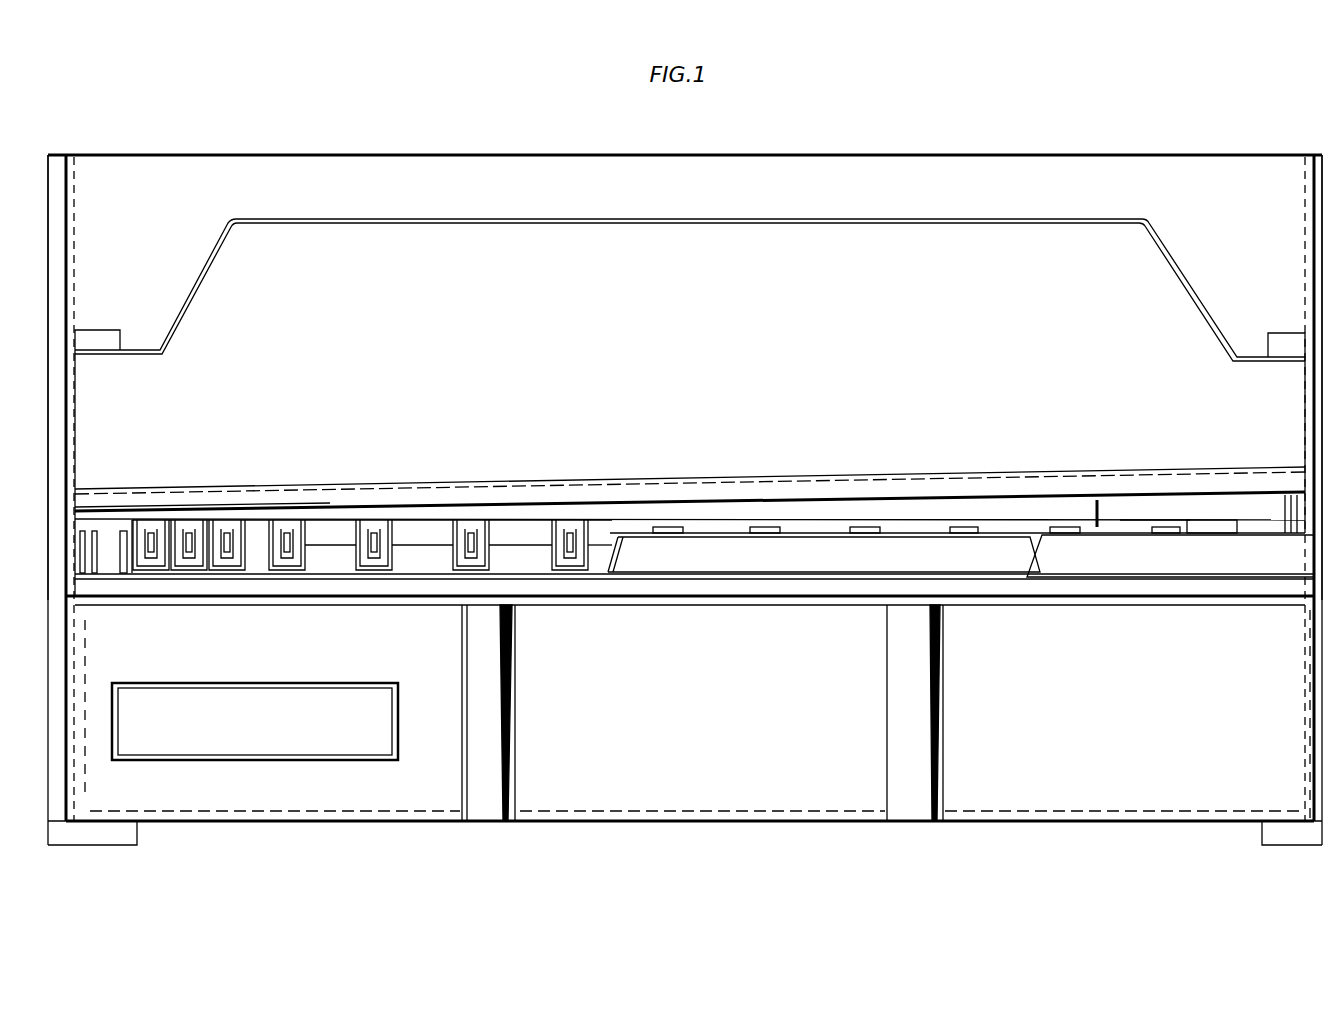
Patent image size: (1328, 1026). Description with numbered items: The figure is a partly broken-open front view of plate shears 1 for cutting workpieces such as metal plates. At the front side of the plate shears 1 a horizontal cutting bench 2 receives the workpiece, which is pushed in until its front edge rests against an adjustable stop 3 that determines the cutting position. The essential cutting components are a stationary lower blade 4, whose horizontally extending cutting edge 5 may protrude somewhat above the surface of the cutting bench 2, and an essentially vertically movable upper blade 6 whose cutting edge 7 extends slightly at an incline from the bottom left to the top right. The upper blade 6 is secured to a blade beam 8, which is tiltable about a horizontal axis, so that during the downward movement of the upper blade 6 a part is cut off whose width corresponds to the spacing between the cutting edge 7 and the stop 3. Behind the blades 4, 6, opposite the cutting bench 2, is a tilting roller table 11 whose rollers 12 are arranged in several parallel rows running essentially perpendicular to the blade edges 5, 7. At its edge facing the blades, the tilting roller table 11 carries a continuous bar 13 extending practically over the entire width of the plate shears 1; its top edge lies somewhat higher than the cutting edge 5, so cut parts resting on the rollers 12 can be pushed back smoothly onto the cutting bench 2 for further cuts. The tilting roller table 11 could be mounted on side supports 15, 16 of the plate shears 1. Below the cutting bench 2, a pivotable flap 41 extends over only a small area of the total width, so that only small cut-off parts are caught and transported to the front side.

The plate shears 1 is at (1160, 150).
The cutting bench 2 is at (1045, 550).
The stop 3 is at (503, 528).
The lower blade 4 is at (1210, 524).
The cutting edge 5 is at (1097, 527).
The upper blade 6 is at (1215, 480).
The cutting edge 7 is at (1140, 508).
The blade beam 8 is at (218, 322).
The tilting roller table 11 is at (684, 551).
The rollers 12 is at (148, 519).
The bar 13 is at (633, 557).
The side support 15 is at (60, 154).
The side support 16 is at (1320, 156).
The flap 41 is at (258, 725).